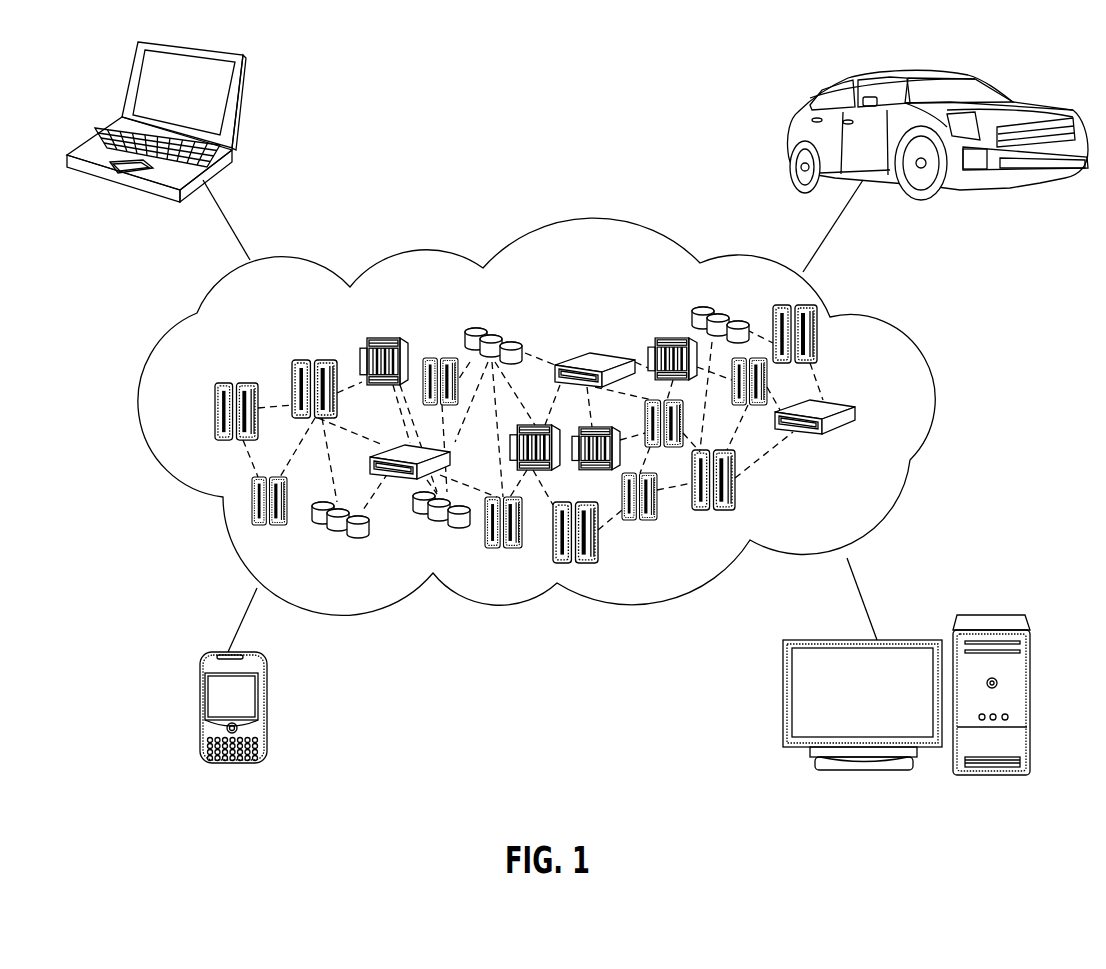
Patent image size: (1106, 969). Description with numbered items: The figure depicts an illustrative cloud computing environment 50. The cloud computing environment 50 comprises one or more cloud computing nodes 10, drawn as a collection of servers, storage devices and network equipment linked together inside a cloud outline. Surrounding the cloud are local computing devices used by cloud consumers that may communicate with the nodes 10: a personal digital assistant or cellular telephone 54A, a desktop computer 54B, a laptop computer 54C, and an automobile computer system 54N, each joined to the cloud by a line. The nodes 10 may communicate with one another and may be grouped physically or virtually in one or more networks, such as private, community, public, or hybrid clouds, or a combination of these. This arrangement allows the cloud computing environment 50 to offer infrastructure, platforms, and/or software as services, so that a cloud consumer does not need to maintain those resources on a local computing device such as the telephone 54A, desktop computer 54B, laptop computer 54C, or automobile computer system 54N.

The cloud computing node 10 is at (896, 428).
The cloud computing environment 50 is at (917, 330).
The personal digital assistant (PDA) or cellular telephone 54A is at (200, 712).
The desktop computer 54B is at (995, 613).
The laptop computer 54C is at (237, 107).
The automobile computer system 54N is at (792, 120).